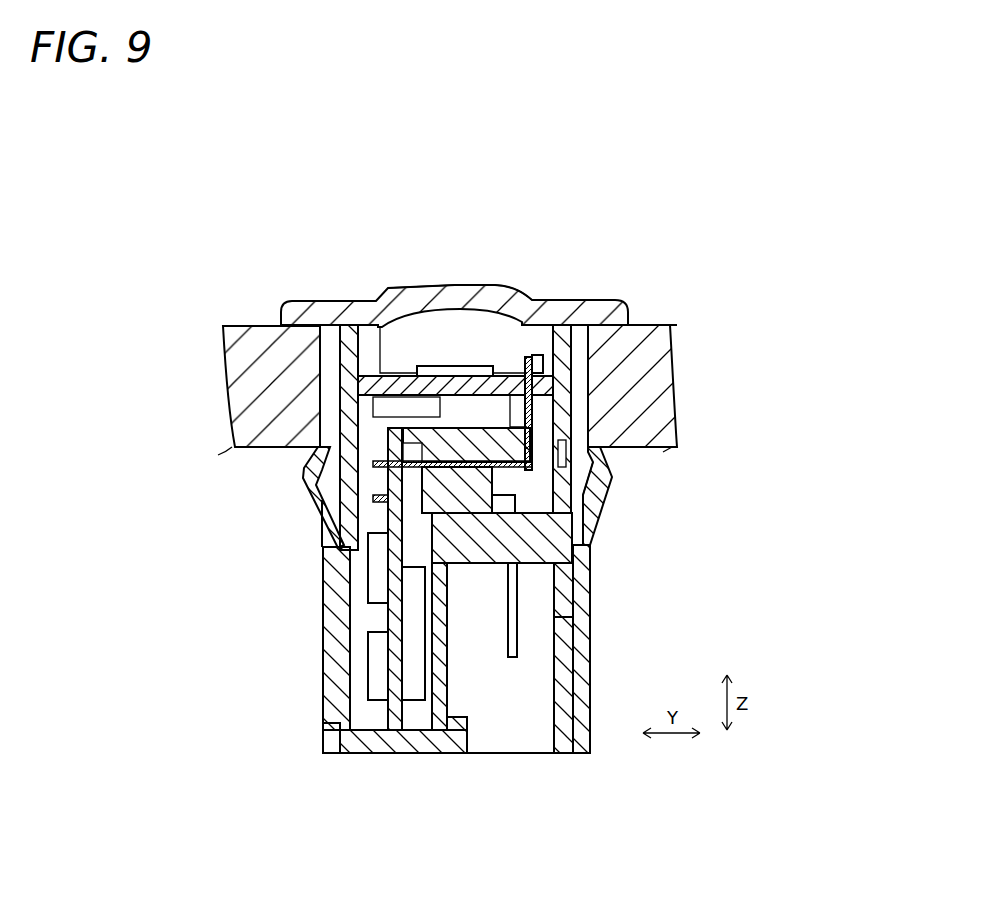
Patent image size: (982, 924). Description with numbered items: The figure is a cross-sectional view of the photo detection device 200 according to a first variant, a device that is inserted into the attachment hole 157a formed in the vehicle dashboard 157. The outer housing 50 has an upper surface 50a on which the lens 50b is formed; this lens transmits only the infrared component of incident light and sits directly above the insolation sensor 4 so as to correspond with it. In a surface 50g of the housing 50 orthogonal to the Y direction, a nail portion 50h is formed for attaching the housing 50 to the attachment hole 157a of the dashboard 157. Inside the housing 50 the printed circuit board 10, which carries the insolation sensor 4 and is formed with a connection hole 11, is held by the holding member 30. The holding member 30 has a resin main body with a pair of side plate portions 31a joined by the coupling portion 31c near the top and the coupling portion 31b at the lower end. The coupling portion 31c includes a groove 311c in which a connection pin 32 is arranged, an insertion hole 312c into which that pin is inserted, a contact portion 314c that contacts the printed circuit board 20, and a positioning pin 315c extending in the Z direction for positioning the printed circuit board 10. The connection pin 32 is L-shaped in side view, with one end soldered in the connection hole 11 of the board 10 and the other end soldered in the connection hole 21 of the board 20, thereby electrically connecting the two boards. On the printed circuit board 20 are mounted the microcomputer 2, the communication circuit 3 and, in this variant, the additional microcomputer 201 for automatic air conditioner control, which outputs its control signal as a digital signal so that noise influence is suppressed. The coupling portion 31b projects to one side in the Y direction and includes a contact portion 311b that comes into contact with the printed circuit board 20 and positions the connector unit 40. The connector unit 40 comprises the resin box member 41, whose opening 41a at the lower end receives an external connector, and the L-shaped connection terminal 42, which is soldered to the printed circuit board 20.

The photo detection device 200 is at (489, 218).
The housing 50 is at (283, 320).
The upper surface 50a is at (338, 312).
The lens 50b is at (461, 290).
The dashboard 157 is at (651, 323).
The attachment hole 157a is at (582, 340).
The holding member 30 is at (358, 335).
The groove 311c is at (572, 440).
The printed circuit board 10 is at (400, 376).
The insolation sensor 4 is at (440, 366).
The side plate portion 31a is at (497, 377).
The connection hole 11 is at (520, 403).
The positioning pin 315c is at (536, 362).
The contact portion 314c is at (387, 432).
The connection hole 21 is at (385, 466).
The insertion hole 312c is at (373, 499).
The printed circuit board 20 is at (393, 573).
The microcomputer 201 is at (378, 553).
The microcomputer 2 is at (410, 613).
The communication circuit 3 is at (380, 668).
The surface 50g is at (337, 633).
The nail portion 50h is at (322, 520).
The connection pin 32 is at (595, 462).
The coupling portion 31c is at (583, 493).
The connector unit 40 is at (543, 555).
The connection terminal 42 is at (525, 602).
The box member 41 is at (568, 667).
The coupling portion 31b is at (362, 745).
The contact portion 311b is at (353, 722).
The opening 41a is at (548, 752).